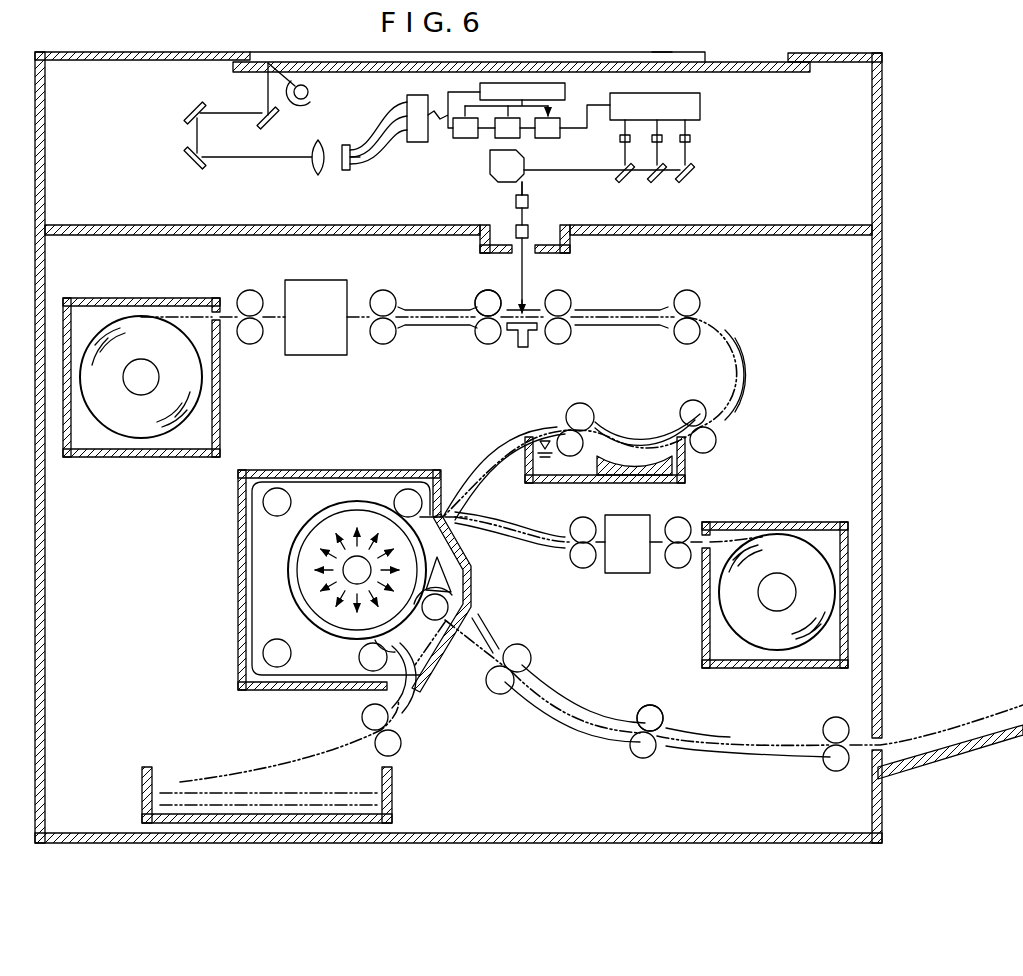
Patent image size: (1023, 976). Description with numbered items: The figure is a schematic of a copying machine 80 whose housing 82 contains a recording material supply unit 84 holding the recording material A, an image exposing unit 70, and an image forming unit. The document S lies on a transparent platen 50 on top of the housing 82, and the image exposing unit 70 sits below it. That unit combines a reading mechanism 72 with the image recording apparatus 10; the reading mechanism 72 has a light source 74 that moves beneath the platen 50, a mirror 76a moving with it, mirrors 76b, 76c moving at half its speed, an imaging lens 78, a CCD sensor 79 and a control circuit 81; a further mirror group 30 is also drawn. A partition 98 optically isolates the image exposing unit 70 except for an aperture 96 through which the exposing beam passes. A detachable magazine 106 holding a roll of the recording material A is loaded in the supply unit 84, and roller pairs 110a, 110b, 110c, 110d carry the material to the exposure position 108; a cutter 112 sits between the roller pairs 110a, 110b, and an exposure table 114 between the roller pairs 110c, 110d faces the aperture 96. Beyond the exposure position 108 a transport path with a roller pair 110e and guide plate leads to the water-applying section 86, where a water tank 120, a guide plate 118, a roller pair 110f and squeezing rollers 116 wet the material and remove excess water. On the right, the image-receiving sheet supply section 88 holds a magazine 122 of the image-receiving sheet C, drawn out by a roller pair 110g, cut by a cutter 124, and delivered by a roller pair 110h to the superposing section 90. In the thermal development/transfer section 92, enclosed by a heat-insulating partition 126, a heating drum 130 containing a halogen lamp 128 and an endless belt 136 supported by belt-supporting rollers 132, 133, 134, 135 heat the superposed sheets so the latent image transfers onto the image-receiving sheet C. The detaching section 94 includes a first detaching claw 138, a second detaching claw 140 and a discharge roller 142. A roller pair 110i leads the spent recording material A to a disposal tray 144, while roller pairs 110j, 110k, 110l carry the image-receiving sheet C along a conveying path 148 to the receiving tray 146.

The image recording apparatus 10 is at (732, 169).
The light beam deflecting mirrors 30 is at (608, 188).
The transparent platen 50 is at (752, 57).
The image exposing unit 70 is at (448, 194).
The reading mechanism 72 is at (210, 117).
The light source 74 is at (299, 84).
The mirror 76a is at (262, 116).
The mirror 76b is at (188, 112).
The mirror 76c is at (196, 166).
The imaging lens 78 is at (318, 176).
The CCD sensor 79 is at (348, 162).
The copying machine 80 is at (545, 55).
The control circuit 81 is at (417, 142).
The housing 82 is at (882, 327).
The recording material supply unit 84 is at (236, 300).
The water-applying section 86 is at (629, 432).
The image-receiving sheet supply section 88 is at (695, 657).
The superposing section 90 is at (480, 506).
The thermal development/transfer section 92 is at (349, 560).
The detaching section 94 is at (440, 660).
The aperture 96 is at (523, 242).
The partition 98 is at (275, 225).
The detachable magazine 106 is at (160, 458).
The exposure position 108 is at (492, 292).
The pair of rollers 110a is at (252, 344).
The pair of rollers 110b is at (388, 344).
The pair of rollers 110c is at (482, 344).
The pair of rollers 110d is at (572, 333).
The pair of rollers 110e is at (700, 297).
The pair of rollers 110f is at (688, 400).
The pair of rollers 110g is at (678, 569).
The pair of rollers 110h is at (583, 569).
The pair of rollers 110i is at (396, 751).
The pair of rollers 110j is at (506, 696).
The pair of rollers 110k is at (643, 759).
The pair of rollers 110l is at (834, 772).
The cutter 112 is at (340, 281).
The exposure table 114 is at (528, 348).
The pair of squeezing rollers 116 is at (581, 403).
The guide plate 118 is at (660, 436).
The water tank 120 is at (686, 475).
The magazine 122 is at (810, 522).
The cutter 124 is at (629, 574).
The heat-insulating partition 126 is at (238, 553).
The halogen lamp 128 is at (355, 558).
The heating drum 130 is at (290, 639).
The belt-supporting roller 132 is at (410, 489).
The belt-supporting roller 133 is at (272, 488).
The belt-supporting roller 134 is at (274, 668).
The belt-supporting roller 135 is at (370, 672).
The endless belt 136 is at (252, 612).
The first detaching claw 138 is at (406, 694).
The second detaching claw 140 is at (450, 572).
The roller 142 is at (449, 608).
The disposal tray 144 is at (142, 790).
The receiving tray 146 is at (980, 742).
The film conveying path 148 is at (752, 767).
The recording material A is at (137, 318).
The image-receiving sheet C is at (822, 581).
The document S is at (656, 52).